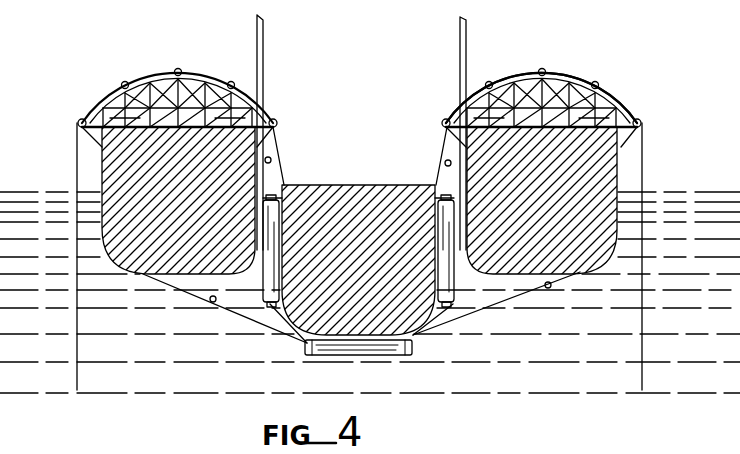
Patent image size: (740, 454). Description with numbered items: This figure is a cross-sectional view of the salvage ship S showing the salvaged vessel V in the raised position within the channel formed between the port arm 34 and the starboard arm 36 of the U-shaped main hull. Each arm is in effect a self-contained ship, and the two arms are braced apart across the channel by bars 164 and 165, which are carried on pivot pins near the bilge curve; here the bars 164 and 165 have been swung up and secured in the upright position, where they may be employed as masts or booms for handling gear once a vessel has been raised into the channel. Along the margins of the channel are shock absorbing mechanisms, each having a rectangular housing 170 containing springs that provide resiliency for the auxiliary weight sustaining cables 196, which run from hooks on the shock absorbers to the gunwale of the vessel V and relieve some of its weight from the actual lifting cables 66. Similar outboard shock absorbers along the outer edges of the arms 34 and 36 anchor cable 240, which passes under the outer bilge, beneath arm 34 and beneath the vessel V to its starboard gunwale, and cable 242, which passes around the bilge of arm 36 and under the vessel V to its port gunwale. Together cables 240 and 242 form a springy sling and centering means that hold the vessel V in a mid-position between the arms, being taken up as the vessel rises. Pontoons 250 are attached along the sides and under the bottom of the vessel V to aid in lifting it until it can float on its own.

The port arm 34 is at (186, 199).
The starboard arm 36 is at (552, 204).
The lifting cables 66 is at (77, 153).
The bar 164 is at (263, 72).
The bar 165 is at (460, 44).
The rectangular housing 170 is at (215, 110).
The auxiliary weight sustaining cables 196 is at (271, 159).
The salvaged vessel V is at (347, 200).
The salvage structure S is at (610, 97).
The cable 240 is at (212, 303).
The cable 242 is at (550, 288).
The pontoons 250 is at (267, 259).